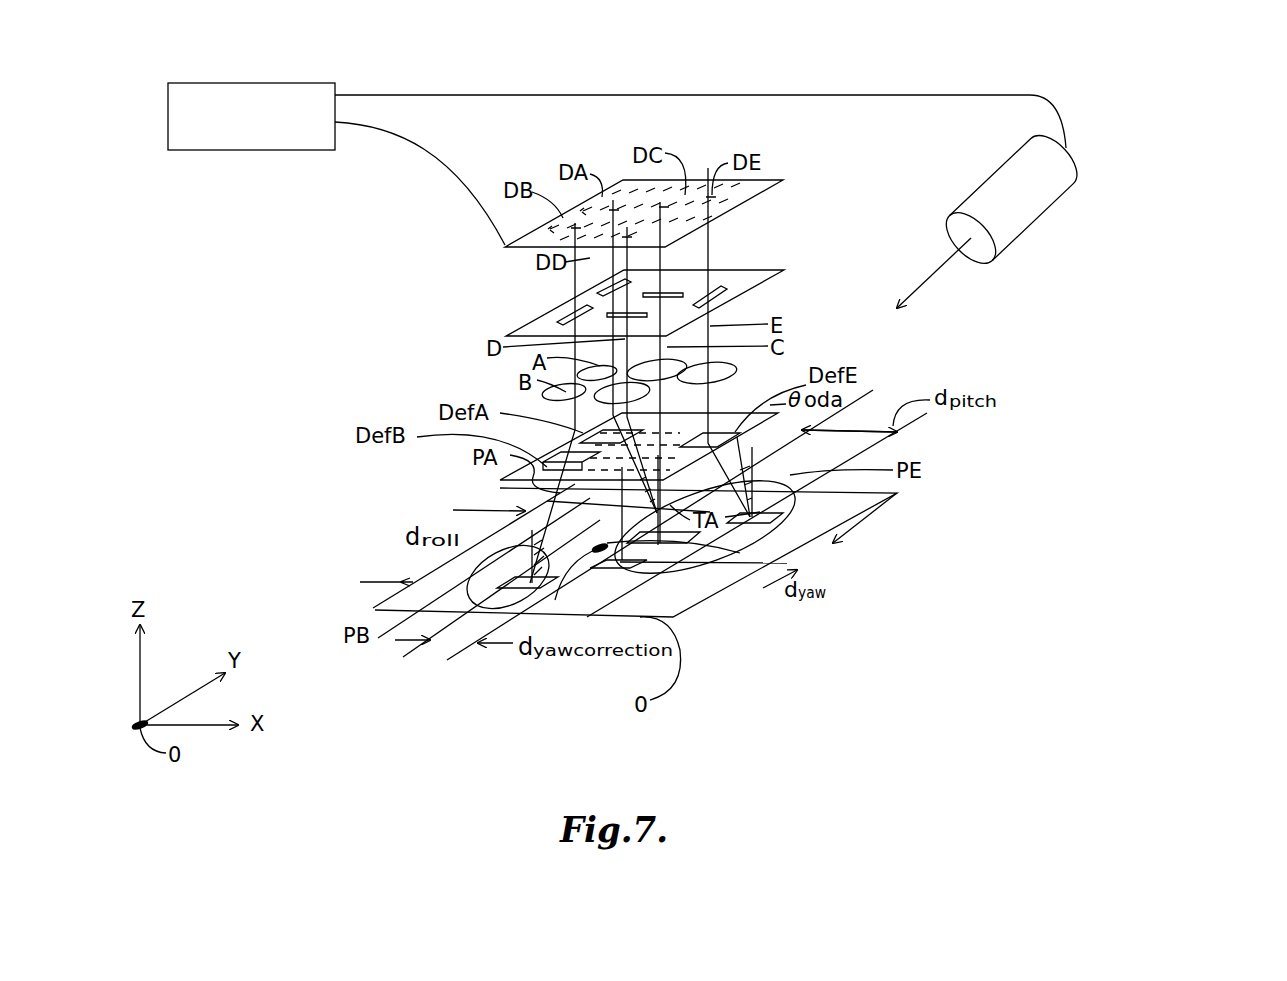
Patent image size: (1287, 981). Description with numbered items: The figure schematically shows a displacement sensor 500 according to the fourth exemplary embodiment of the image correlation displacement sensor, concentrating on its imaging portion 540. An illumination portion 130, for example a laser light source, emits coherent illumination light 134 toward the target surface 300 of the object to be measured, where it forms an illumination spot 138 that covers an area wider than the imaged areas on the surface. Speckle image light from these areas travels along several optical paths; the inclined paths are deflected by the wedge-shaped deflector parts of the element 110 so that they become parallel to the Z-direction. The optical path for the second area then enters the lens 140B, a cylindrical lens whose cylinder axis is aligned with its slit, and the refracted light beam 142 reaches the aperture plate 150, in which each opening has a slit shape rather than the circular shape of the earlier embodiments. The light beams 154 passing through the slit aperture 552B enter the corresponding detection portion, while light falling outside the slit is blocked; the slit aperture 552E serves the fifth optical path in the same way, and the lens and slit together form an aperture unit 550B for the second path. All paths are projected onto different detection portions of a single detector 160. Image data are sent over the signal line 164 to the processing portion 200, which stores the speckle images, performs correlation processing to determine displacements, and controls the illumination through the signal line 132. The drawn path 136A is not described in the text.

The processing portion 200 is at (168, 119).
The signal line 132 is at (552, 97).
The signal line 164 is at (425, 160).
The illumination portion 130 is at (1015, 262).
The illumination light 134 is at (958, 288).
The displacement sensor 500 is at (1137, 185).
The detector 160 is at (768, 182).
The light beams 154 is at (730, 242).
The light beam 142 is at (653, 293).
The slit aperture 552B is at (533, 313).
The slit aperture 552E is at (723, 288).
The aperture unit 550B is at (346, 298).
The aperture plate 150 is at (540, 327).
The lens 140B is at (540, 397).
The element 110 is at (500, 480).
The imaging portion 540 is at (292, 400).
The beamlet path 136A is at (500, 488).
The target surface 300 is at (700, 618).
The illumination spot 138 is at (720, 573).